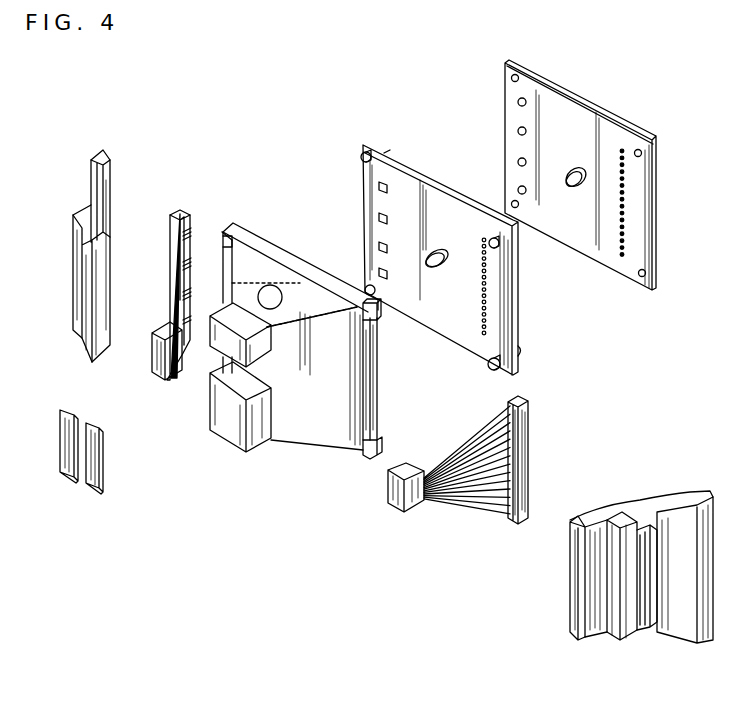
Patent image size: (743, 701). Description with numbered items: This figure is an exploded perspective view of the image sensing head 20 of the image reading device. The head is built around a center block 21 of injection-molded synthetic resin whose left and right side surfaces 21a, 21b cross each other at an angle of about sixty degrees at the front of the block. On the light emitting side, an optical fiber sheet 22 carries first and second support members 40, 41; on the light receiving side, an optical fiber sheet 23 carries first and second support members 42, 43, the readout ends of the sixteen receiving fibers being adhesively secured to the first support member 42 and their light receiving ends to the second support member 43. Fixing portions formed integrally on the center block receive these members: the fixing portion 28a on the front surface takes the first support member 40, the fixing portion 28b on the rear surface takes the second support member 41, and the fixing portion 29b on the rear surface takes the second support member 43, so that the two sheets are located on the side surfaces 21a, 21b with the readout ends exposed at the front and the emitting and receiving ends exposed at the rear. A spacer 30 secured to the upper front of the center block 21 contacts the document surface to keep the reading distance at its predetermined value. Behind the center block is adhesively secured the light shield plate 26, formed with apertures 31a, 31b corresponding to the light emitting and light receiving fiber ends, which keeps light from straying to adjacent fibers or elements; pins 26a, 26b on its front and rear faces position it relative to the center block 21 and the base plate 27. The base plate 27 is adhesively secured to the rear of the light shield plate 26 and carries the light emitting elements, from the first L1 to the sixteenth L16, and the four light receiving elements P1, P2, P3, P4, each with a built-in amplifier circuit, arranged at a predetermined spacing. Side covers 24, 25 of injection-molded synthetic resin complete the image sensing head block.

The image sensing head 20 is at (272, 143).
The center block 21 is at (232, 438).
The left side surface 21a is at (330, 432).
The right side surface 21b is at (230, 270).
The optical fiber sheet of the light emitting side 22 is at (473, 512).
The optical fiber sheet of the light receiving side 23 is at (170, 278).
The side cover 24 is at (617, 620).
The side cover 25 is at (80, 243).
The light shield plate 26 is at (433, 178).
The pin 26a is at (362, 156).
The pin 26b is at (388, 150).
The base plate 27 is at (572, 110).
The fixing portion 28a is at (273, 360).
The fixing portion 28b is at (377, 318).
The fixing portion 29b is at (224, 230).
The spacer 30 is at (88, 482).
The apertures 31a is at (488, 258).
The apertures 31b is at (377, 272).
The first support member 40 is at (413, 508).
The second support member 41 is at (529, 474).
The first support member 42 is at (153, 363).
The second support member 43 is at (180, 212).
The light receiving element P1 is at (522, 98).
The light receiving element P2 is at (519, 128).
The light receiving element P3 is at (519, 159).
The light receiving element P4 is at (519, 187).
The light emitting element L1 is at (624, 151).
The light emitting element L16 is at (690, 185).